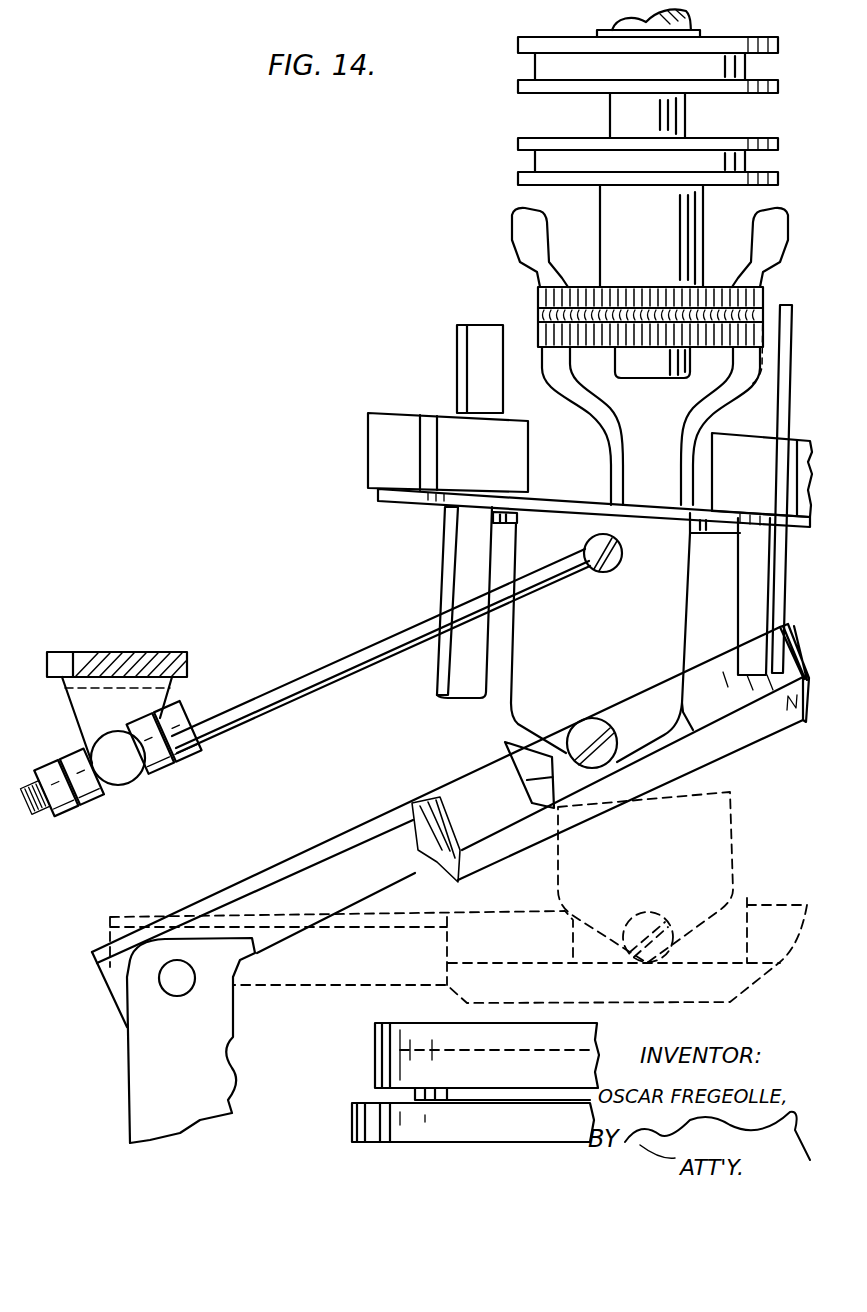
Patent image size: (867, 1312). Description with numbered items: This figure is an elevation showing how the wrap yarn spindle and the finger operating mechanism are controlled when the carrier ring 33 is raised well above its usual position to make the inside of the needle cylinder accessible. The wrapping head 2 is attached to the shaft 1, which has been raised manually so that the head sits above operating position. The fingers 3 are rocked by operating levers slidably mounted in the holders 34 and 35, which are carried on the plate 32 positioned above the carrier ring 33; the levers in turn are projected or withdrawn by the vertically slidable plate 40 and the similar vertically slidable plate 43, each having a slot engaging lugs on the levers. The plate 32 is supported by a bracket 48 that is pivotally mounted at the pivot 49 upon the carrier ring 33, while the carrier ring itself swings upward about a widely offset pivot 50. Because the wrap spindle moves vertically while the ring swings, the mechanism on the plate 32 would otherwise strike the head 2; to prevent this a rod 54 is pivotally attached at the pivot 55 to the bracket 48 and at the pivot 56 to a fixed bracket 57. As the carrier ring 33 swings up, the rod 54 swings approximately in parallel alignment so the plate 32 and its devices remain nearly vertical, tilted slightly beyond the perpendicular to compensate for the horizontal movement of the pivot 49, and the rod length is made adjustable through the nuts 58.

The shaft 1 is at (648, 376).
The wrapping head 2 is at (538, 300).
The finger 3 is at (535, 232).
The plate 32 is at (653, 510).
The carrier ring 33 is at (447, 788).
The holder 34 is at (448, 426).
The holder 35 is at (712, 468).
The vertically slidable plate 40 is at (476, 328).
The vertically slidable plate 43 is at (774, 312).
The bracket 48 is at (752, 832).
The pivot 49 is at (600, 730).
The pivot 50 is at (180, 990).
The rod 54 is at (386, 648).
The pivot 55 is at (622, 553).
The pivot 56 is at (122, 773).
The fixed bracket 57 is at (158, 698).
The nuts 58 is at (195, 746).